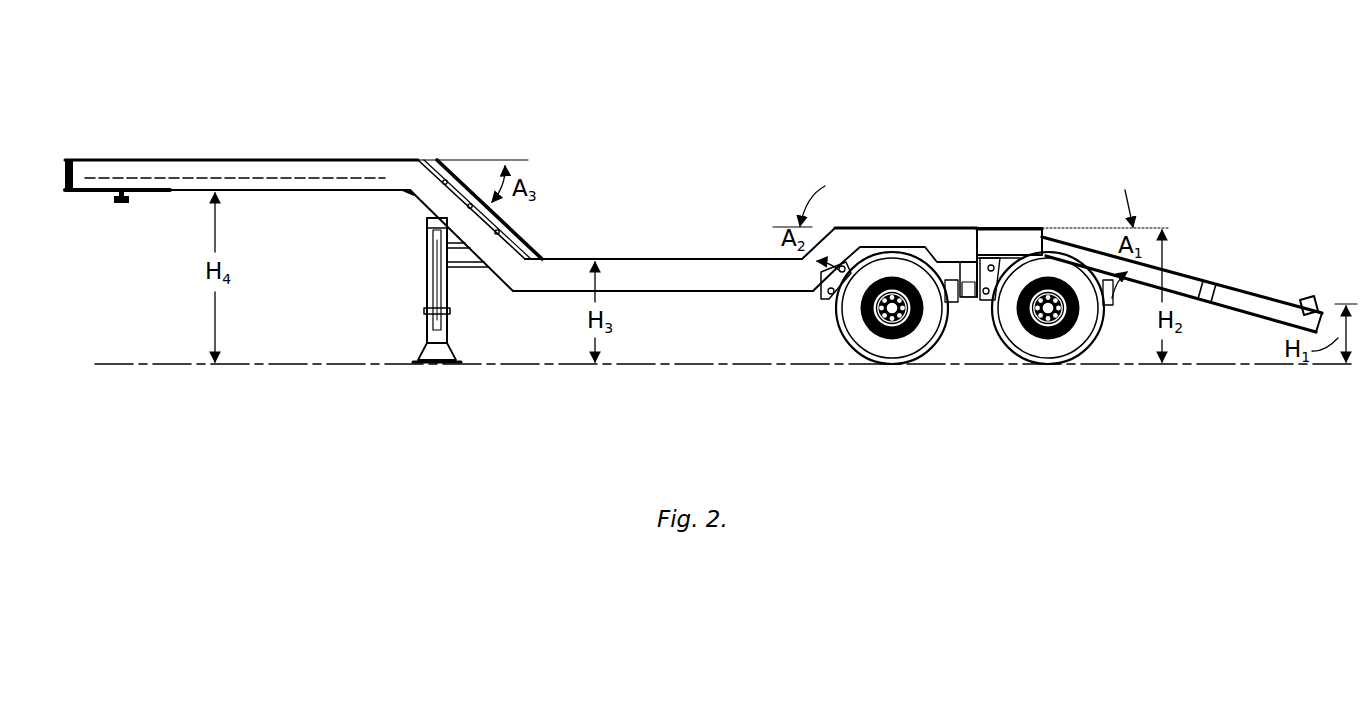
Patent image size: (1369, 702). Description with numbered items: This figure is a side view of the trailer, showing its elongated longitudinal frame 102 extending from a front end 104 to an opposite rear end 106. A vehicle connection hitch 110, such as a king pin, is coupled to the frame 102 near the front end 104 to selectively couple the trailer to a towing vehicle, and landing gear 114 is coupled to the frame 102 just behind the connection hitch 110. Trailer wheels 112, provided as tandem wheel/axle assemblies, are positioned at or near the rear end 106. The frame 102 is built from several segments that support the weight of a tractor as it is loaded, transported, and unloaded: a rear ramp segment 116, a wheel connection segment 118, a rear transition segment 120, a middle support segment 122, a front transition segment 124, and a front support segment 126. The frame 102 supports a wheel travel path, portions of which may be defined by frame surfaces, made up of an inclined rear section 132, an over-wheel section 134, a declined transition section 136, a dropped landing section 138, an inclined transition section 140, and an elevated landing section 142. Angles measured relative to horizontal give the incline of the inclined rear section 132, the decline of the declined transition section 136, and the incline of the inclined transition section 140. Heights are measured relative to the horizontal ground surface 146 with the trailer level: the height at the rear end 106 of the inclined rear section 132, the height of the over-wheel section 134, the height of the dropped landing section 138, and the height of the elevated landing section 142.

The frame 102 is at (695, 257).
The front end 104 is at (64, 174).
The rear end 106 is at (1330, 307).
The vehicle connection hitch 110 is at (127, 203).
The trailer wheels 112 is at (900, 348).
The landing gear 114 is at (426, 284).
The rear ramp segment 116 is at (1187, 320).
The wheel connection segment 118 is at (1005, 243).
The rear transition segment 120 is at (815, 278).
The middle support segment 122 is at (672, 292).
The front transition segment 124 is at (493, 252).
The front support segment 126 is at (330, 192).
The inclined rear section 132 is at (1213, 290).
The over-wheel section 134 is at (905, 228).
The declined transition section 136 is at (822, 240).
The dropped landing section 138 is at (658, 258).
The inclined transition section 140 is at (522, 238).
The elevated landing section 142 is at (183, 180).
The ground surface 146 is at (317, 366).